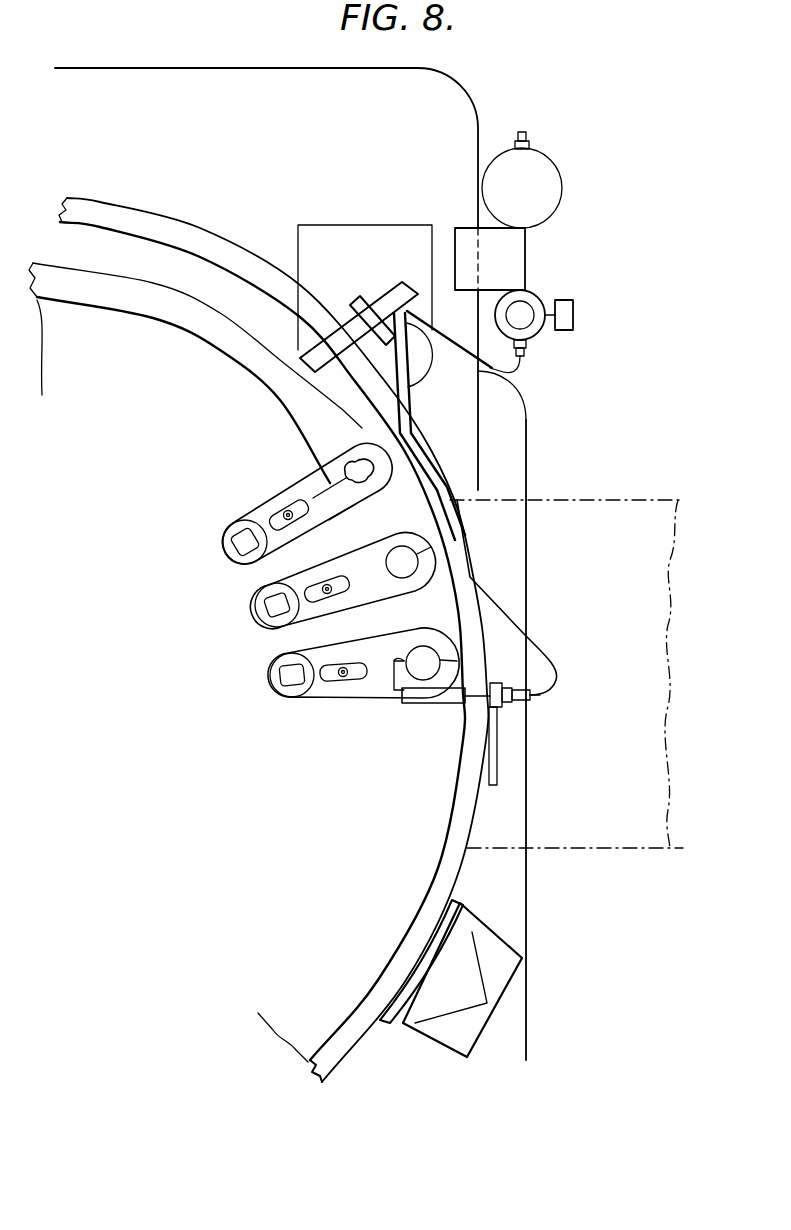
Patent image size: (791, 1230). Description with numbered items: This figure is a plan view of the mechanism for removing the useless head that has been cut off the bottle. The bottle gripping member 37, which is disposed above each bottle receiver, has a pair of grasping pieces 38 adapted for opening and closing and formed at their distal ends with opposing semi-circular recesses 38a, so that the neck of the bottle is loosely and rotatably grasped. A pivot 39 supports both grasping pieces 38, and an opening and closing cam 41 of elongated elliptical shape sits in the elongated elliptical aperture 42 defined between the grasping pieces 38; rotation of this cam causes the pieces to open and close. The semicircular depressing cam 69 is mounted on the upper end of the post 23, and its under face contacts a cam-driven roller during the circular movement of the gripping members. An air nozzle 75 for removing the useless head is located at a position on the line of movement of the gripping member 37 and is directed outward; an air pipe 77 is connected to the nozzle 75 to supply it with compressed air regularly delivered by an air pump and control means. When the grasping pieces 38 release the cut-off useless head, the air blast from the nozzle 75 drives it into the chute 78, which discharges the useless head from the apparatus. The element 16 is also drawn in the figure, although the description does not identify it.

The pressure regulator and gauge 16 is at (532, 213).
The post 23 is at (347, 320).
The bottle gripping member 37 is at (252, 492).
The grasping pieces 38 is at (313, 471).
The semi-circular recesses 38a is at (372, 468).
The pivot 39 is at (272, 607).
The opening and closing cam 41 is at (288, 528).
The elongated elliptical aperture 42 is at (320, 512).
The semicircular depressing cam 69 is at (202, 333).
The air nozzle 75 is at (394, 686).
The air pipe 77 is at (503, 607).
The chute 78 is at (556, 850).